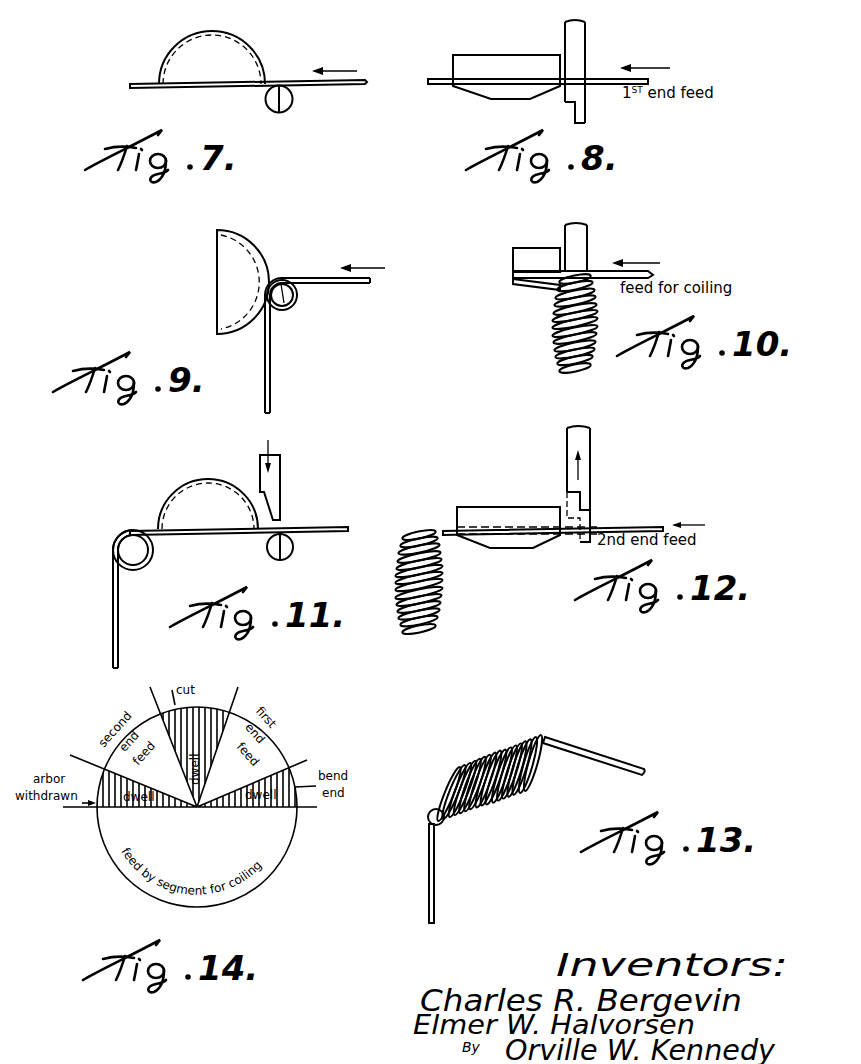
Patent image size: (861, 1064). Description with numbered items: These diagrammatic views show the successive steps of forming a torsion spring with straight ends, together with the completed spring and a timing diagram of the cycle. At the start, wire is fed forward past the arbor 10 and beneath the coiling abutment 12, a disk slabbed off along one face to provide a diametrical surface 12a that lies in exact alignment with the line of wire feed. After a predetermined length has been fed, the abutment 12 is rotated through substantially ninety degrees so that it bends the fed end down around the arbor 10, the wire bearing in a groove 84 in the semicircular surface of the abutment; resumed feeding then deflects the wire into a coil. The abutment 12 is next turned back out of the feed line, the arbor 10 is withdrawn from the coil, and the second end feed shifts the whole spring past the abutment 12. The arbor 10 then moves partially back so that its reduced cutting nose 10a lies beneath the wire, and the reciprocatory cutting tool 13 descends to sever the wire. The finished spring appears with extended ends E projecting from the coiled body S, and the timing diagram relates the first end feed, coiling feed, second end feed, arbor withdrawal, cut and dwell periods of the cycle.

In FIG. 7, the arbor 10 is at (268, 104).
In FIG. 8, the arbor 10 is at (579, 56).
In FIG. 9, the arbor 10 is at (285, 300).
In FIG. 10, the arbor 10 is at (580, 246).
In FIG. 11, the arbor 10 is at (270, 553).
In FIG. 12, the arbor 10 is at (585, 447).
In FIG. 7, the cutting nose of the arbor 10a is at (292, 96).
In FIG. 8, the cutting nose of the arbor 10a is at (589, 118).
In FIG. 11, the cutting nose of the arbor 10a is at (293, 547).
In FIG. 12, the cutting nose of the arbor 10a is at (590, 504).
In FIG. 7, the coiling abutment 12 is at (232, 48).
In FIG. 8, the coiling abutment 12 is at (532, 60).
In FIG. 9, the coiling abutment 12 is at (240, 259).
In FIG. 10, the coiling abutment 12 is at (540, 256).
In FIG. 11, the coiling abutment 12 is at (205, 487).
In FIG. 12, the coiling abutment 12 is at (518, 510).
In FIG. 7, the diametrical surface 12a is at (231, 78).
In FIG. 11, the diametrical surface 12a is at (184, 527).
In FIG. 11, the cutting tool 13 is at (280, 485).
In FIG. 8, the groove 84 is at (482, 78).
In FIG. 10, the groove 84 is at (508, 284).
In FIG. 13, the coiled body S is at (478, 762).
In FIG. 13, the extended ends E is at (434, 880).